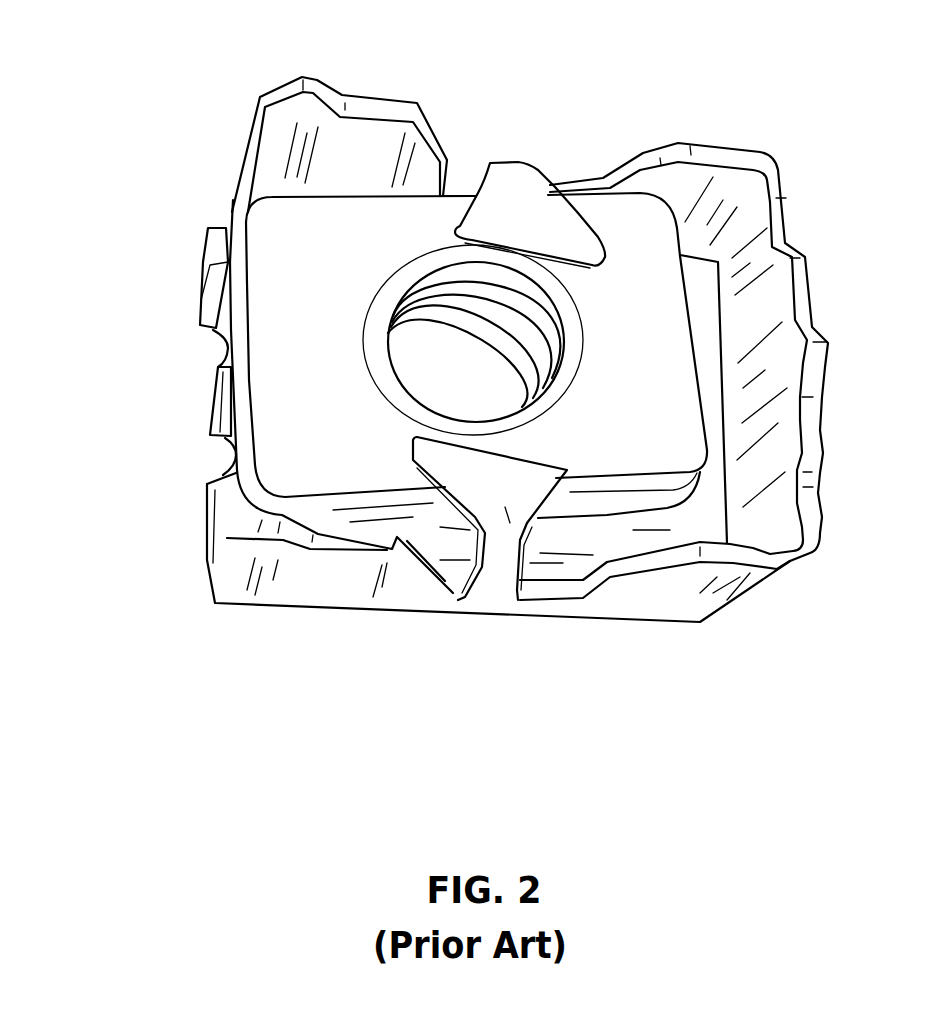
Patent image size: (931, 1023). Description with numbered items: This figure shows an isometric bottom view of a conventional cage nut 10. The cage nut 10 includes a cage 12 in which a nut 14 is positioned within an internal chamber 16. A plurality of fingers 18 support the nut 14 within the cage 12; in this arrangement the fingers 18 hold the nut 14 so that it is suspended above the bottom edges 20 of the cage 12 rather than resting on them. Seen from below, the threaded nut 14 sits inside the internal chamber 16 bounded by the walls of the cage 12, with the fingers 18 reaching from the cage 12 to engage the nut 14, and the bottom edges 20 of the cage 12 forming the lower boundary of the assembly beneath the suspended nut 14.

The cage nut 10 is at (143, 78).
The cage 12 is at (780, 213).
The nut 14 is at (593, 223).
The internal chamber 16 is at (449, 205).
The fingers 18 is at (523, 177).
The bottom edges 20 is at (318, 78).